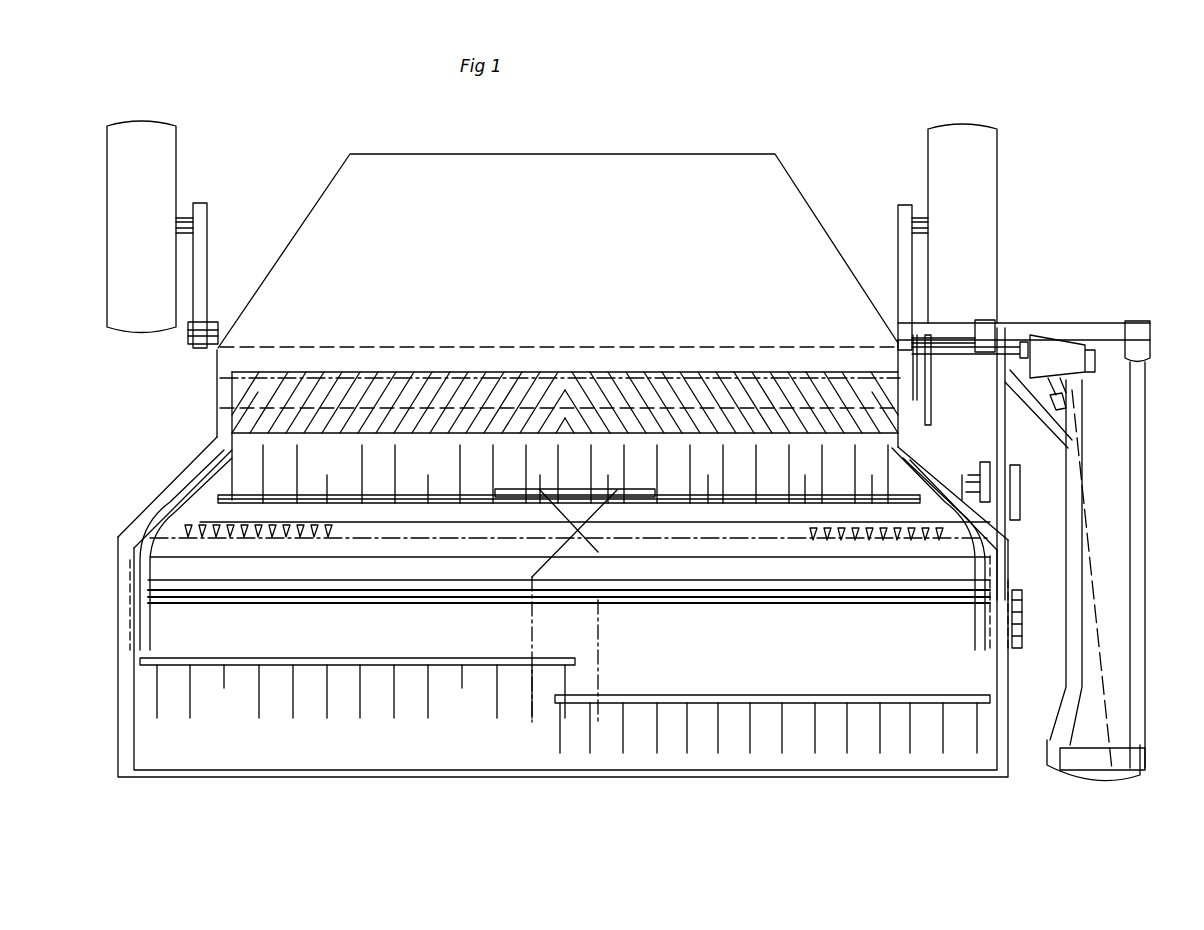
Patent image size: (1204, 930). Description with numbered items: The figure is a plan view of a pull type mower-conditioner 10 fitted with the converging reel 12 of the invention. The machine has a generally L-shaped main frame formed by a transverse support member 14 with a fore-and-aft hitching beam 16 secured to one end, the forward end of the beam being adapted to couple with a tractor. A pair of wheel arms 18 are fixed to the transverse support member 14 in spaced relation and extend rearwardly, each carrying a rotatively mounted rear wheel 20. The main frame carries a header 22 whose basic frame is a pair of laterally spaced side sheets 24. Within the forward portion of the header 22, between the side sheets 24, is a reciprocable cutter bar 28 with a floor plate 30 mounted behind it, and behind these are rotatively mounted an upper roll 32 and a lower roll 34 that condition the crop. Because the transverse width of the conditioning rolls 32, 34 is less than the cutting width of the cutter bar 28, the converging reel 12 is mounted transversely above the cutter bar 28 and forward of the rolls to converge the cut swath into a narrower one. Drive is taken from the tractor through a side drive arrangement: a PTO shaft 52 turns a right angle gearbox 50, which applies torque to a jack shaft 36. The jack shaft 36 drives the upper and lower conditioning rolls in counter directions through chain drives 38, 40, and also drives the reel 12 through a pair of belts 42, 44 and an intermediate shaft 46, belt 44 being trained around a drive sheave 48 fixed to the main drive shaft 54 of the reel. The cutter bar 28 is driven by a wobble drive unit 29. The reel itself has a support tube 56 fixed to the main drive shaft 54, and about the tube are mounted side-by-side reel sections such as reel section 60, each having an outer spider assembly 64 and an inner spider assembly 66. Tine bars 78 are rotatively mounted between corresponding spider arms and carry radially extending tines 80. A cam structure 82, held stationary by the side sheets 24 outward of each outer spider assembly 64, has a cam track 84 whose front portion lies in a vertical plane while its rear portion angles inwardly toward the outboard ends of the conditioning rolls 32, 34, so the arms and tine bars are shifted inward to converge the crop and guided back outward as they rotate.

The pull type mower-conditioner 10 is at (648, 66).
The converging reel 12 is at (248, 480).
The transverse support member 14 is at (220, 324).
The hitching beam 16 is at (1134, 486).
The wheel arms 18 is at (207, 243).
The rear wheel 20 is at (178, 152).
The header 22 is at (150, 470).
The side sheets 24 is at (118, 654).
The cutter bar 28 is at (531, 154).
The wobble drive unit 29 is at (985, 468).
The floor plate 30 is at (575, 474).
The upper roll 32 is at (407, 443).
The lower roll 34 is at (667, 436).
The jack shaft 36 is at (953, 354).
The chain drive 38 is at (933, 386).
The chain drive 40 is at (902, 362).
The belt 42 is at (1012, 438).
The belt 44 is at (1015, 524).
The intermediate shaft 46 is at (970, 474).
The drive sheave 48 is at (1022, 626).
The right angle gearbox 50 is at (1058, 346).
The PTO shaft 52 is at (1080, 440).
The main drive shaft 54 is at (1014, 646).
The support tube 56 is at (345, 604).
The reel section 60 is at (448, 678).
The outer spider assembly 64 is at (176, 630).
The inner spider assembly 66 is at (596, 627).
The tine bar 78 is at (206, 666).
The tines 80 is at (318, 716).
The cam structure 82 is at (124, 548).
The cam track 84 is at (146, 512).